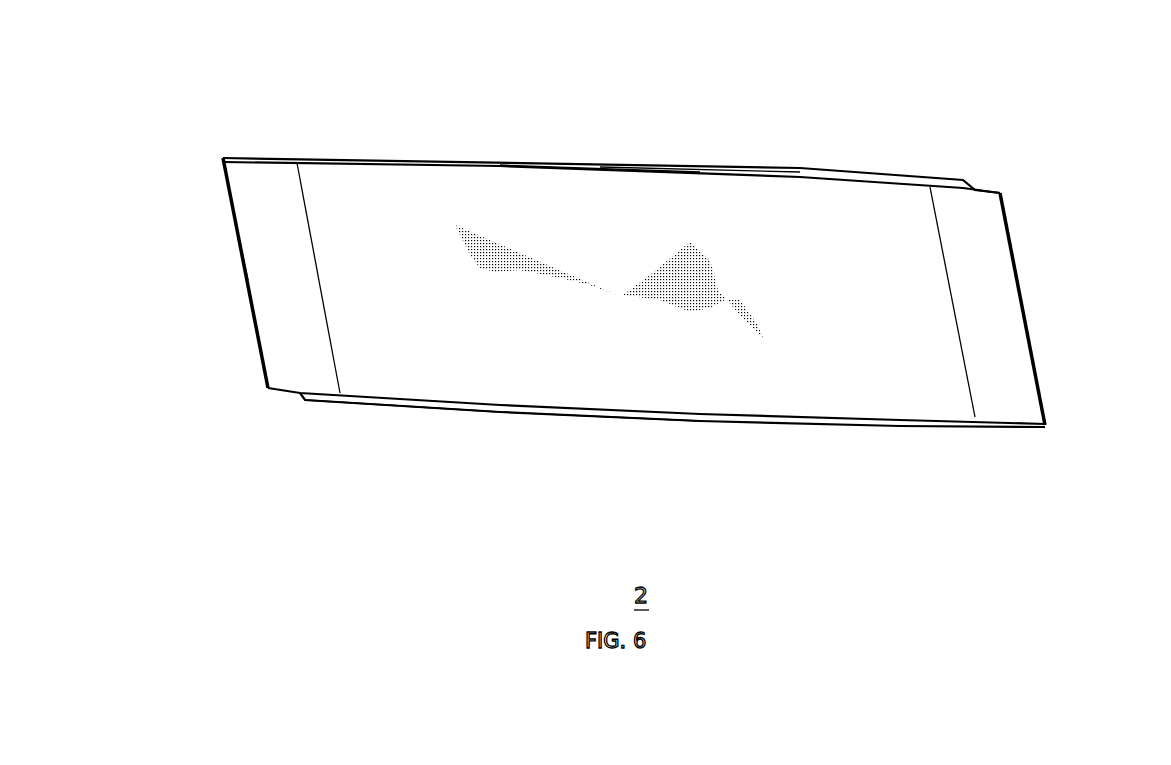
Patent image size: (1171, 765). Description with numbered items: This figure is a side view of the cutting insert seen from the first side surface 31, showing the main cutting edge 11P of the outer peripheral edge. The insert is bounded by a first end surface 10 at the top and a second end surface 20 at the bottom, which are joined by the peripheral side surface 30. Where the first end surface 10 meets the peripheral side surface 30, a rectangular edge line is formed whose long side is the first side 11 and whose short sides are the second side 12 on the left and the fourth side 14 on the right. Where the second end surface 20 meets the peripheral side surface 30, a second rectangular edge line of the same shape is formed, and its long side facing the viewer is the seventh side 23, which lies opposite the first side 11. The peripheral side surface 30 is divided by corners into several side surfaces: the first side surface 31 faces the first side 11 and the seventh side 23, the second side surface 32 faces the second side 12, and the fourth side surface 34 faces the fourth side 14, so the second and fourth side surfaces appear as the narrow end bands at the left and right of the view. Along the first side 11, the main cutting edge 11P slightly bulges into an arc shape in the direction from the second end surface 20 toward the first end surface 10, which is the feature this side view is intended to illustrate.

The first end surface 10 is at (474, 146).
The first side 11 is at (680, 163).
The main cutting edge 11P is at (590, 163).
The second side 12 is at (222, 157).
The fourth side 14 is at (1000, 193).
The second end surface 20 is at (420, 410).
The seventh side 23 is at (598, 418).
The peripheral side surface 30 is at (812, 366).
The first side surface 31 is at (665, 330).
The second side surface 32 is at (246, 275).
The fourth side surface 34 is at (1018, 283).